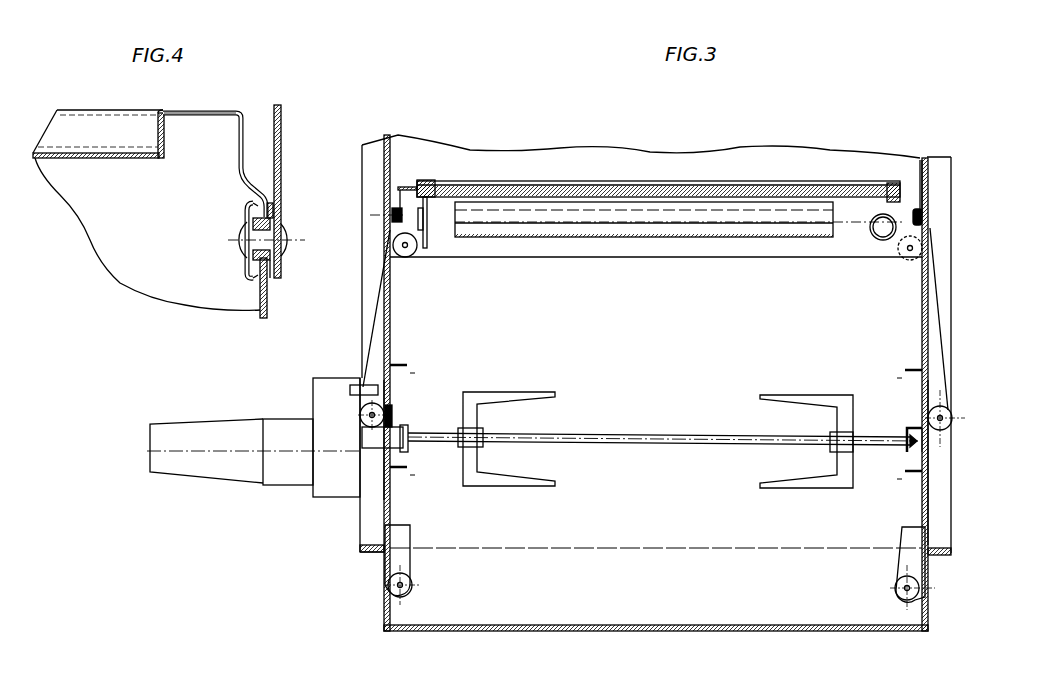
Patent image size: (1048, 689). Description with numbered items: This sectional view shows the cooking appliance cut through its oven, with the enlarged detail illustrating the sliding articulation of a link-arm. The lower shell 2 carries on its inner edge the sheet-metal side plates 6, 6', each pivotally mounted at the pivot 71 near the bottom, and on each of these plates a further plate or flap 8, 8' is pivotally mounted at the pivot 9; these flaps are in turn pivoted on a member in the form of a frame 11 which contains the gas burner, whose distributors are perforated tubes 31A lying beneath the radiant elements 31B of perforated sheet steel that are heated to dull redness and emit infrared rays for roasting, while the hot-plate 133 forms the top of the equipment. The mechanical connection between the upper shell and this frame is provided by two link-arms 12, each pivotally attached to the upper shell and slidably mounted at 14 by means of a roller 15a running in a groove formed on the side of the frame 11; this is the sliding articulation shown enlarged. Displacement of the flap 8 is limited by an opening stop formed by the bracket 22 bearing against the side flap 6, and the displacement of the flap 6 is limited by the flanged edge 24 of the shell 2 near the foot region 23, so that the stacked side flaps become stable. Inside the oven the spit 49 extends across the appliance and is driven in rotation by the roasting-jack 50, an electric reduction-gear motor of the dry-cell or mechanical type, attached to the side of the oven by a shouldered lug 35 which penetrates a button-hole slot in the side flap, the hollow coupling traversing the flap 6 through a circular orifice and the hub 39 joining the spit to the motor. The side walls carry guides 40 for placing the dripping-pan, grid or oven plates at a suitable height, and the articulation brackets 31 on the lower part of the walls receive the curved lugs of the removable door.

In FIG. 3, the shell 2 is at (603, 632).
In FIG. 3, the sheet-metal plate 6 is at (408, 445).
In FIG. 3, the sheet-metal plate 6' is at (900, 462).
In FIG. 3, the plate 8 is at (399, 308).
In FIG. 3, the plate 8' is at (901, 319).
In FIG. 3, the pivot 9 is at (950, 420).
In FIG. 4, the frame 11 is at (263, 298).
In FIG. 4, the link-arm 12 is at (278, 108).
In FIG. 3, the link-arm 12 is at (927, 173).
In FIG. 4, the sliding mounting 14 is at (294, 229).
In FIG. 3, the sliding mounting 14 is at (932, 220).
In FIG. 4, the roller 15a is at (268, 220).
In FIG. 3, the bracket 22 is at (920, 426).
In FIG. 3, the foot 23 is at (373, 543).
In FIG. 3, the flanged edge 24 is at (368, 552).
In FIG. 3, the articulation bracket 31 is at (407, 533).
In FIG. 3, the perforated tube 31A is at (848, 232).
In FIG. 3, the radiant element 31B is at (577, 238).
In FIG. 3, the shouldered lug 35 is at (392, 387).
In FIG. 3, the hub 39 is at (407, 446).
In FIG. 3, the guide 40 is at (920, 368).
In FIG. 3, the spit 49 is at (598, 435).
In FIG. 3, the roasting-jack 50 is at (208, 467).
In FIG. 3, the pivot 71 is at (420, 587).
In FIG. 3, the hot-plate 133 is at (488, 185).